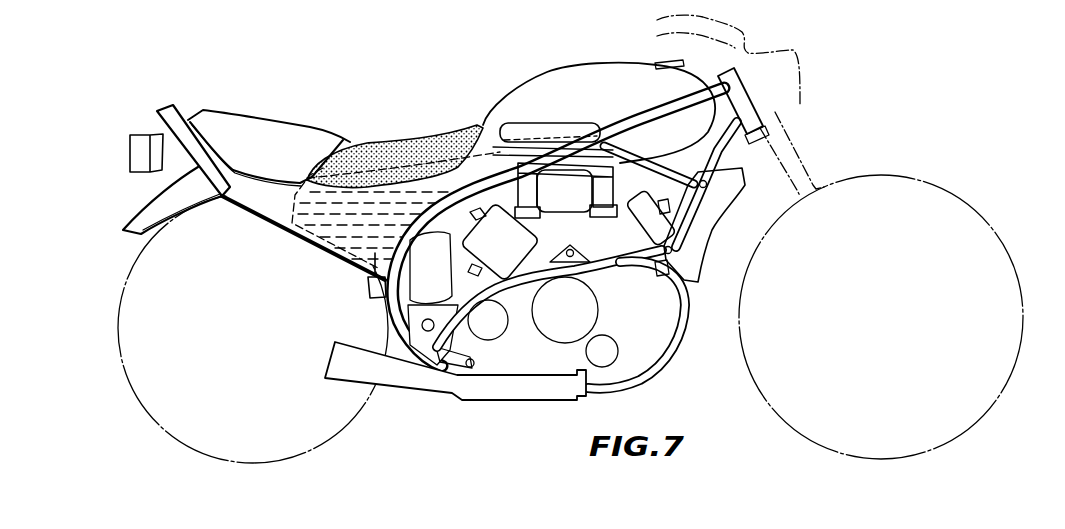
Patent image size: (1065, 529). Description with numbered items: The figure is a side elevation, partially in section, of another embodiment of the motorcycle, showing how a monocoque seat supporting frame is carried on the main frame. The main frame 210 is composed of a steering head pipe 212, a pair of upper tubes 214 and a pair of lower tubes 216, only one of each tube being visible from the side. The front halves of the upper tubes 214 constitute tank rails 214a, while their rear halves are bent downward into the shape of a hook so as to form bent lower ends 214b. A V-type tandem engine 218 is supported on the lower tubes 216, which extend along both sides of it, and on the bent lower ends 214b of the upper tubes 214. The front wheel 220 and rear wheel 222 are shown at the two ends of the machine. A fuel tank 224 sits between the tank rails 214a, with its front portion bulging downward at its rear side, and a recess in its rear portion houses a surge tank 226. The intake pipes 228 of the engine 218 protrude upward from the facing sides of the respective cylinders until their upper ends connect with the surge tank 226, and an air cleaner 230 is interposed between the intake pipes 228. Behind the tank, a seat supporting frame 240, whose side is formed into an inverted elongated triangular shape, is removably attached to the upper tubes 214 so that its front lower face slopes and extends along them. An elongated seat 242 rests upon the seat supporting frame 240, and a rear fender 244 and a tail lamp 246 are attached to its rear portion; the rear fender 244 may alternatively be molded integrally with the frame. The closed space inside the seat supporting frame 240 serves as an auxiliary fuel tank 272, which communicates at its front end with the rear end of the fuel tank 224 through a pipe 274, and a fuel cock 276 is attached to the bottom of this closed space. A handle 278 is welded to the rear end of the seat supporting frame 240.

The main frame 210 is at (750, 97).
The steering head pipe 212 is at (797, 108).
The upper tubes 214 is at (620, 112).
The tank rails 214a is at (667, 105).
The bent lower ends 214b is at (487, 375).
The lower tubes 216 is at (745, 158).
The V-type tandem engine 218 is at (633, 282).
The front wheel 220 is at (982, 215).
The rear wheel 222 is at (117, 337).
The fuel tank 224 is at (567, 68).
The surge tank 226 is at (547, 133).
The intake pipes 228 is at (611, 185).
The air cleaner 230 is at (568, 212).
The seat supporting frame 240 is at (277, 220).
The seat 242 is at (313, 127).
The rear fender 244 is at (127, 217).
The tail lamp 246 is at (130, 136).
The auxiliary fuel tank 272 is at (381, 241).
The pipe 274 is at (460, 127).
The fuel cock 276 is at (353, 305).
The handle 278 is at (157, 111).